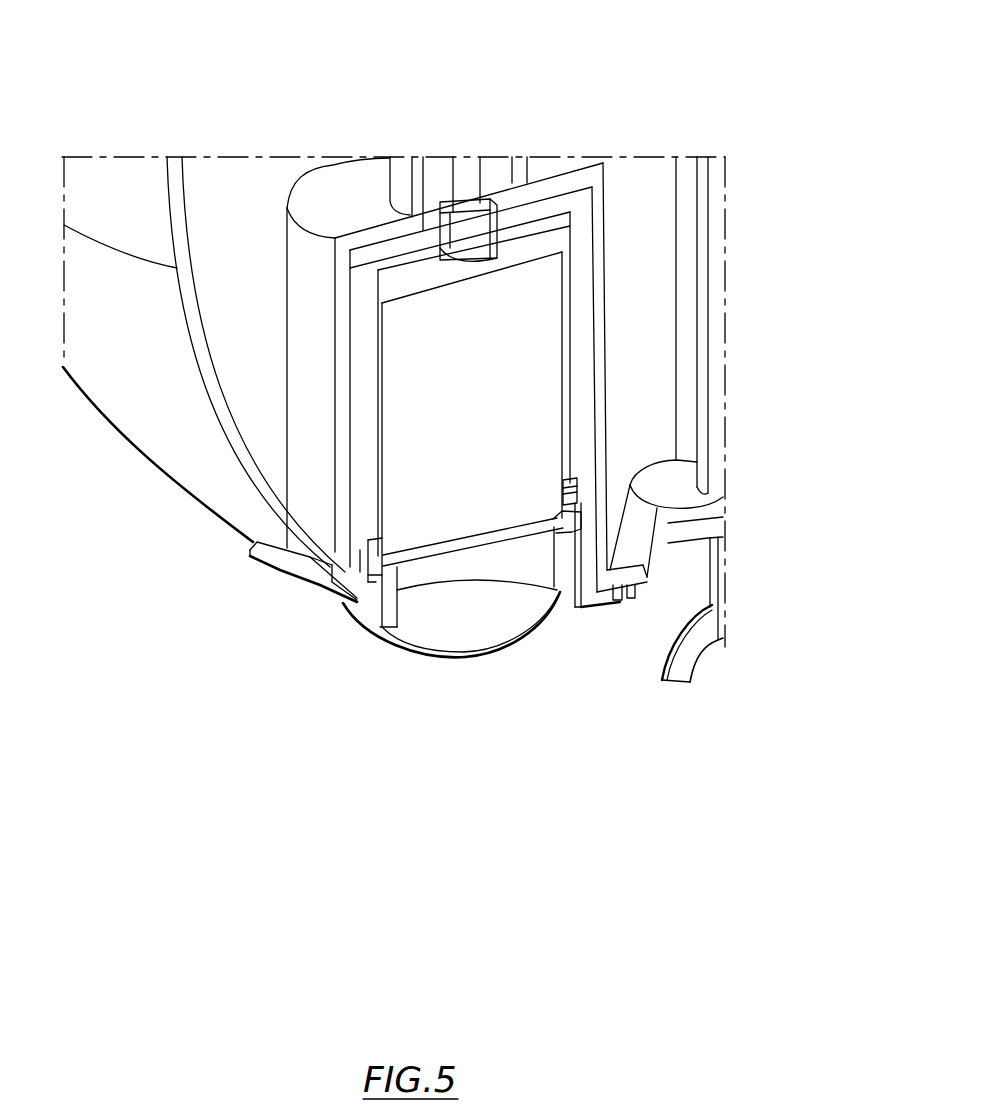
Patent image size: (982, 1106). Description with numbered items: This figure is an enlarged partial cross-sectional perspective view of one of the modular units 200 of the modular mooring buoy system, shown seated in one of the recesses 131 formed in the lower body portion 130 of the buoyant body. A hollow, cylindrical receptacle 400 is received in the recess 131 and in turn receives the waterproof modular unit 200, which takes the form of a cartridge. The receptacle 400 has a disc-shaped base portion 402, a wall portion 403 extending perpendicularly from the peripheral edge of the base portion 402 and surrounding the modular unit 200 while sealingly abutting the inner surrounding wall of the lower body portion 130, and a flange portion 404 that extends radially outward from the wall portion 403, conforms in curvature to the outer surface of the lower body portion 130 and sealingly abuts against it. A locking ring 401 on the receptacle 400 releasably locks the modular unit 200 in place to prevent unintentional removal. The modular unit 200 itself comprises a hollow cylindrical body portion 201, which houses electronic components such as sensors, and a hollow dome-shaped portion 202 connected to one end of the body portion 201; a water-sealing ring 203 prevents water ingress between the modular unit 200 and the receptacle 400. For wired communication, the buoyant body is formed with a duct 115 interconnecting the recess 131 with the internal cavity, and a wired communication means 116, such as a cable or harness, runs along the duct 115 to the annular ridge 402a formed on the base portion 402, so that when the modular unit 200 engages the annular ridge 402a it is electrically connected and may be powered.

The duct 115 is at (503, 175).
The wired communication means 116 is at (468, 190).
The lower body portion 130 is at (172, 452).
The recess 131 is at (550, 410).
The modular unit 200 is at (515, 670).
The body portion 201 is at (457, 513).
The dome-shaped portion 202 is at (460, 635).
The water-sealing ring 203 is at (578, 498).
The receptacle 400 is at (362, 560).
The locking ring 401 is at (583, 610).
The base portion 402 is at (418, 257).
The annular ridge 402a is at (497, 247).
The wall portion 403 is at (585, 335).
The flange portion 404 is at (288, 555).